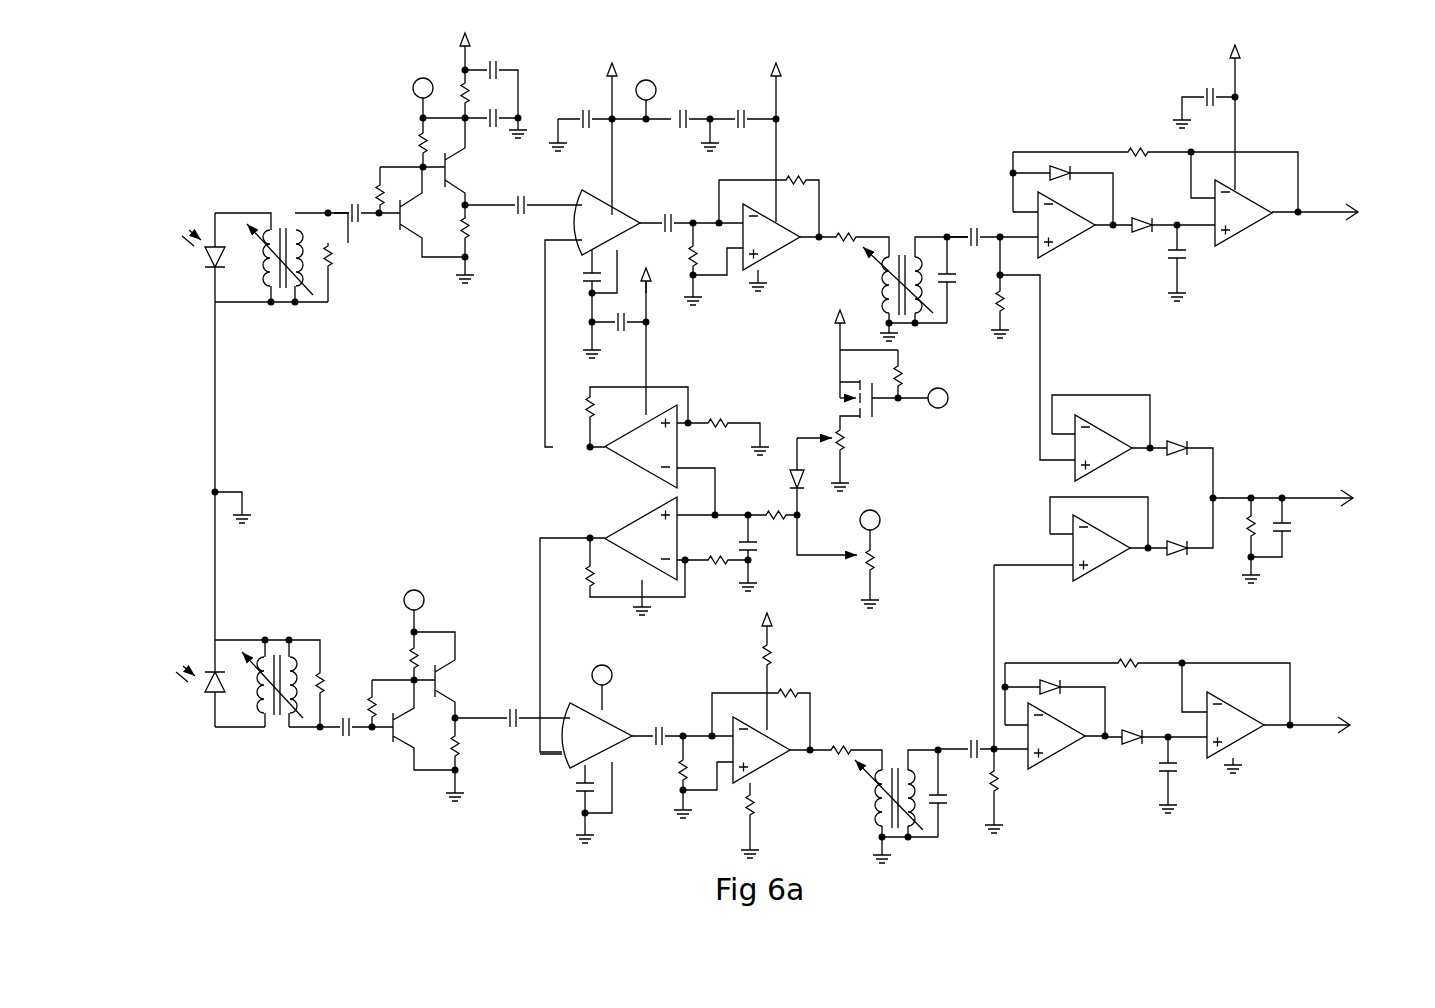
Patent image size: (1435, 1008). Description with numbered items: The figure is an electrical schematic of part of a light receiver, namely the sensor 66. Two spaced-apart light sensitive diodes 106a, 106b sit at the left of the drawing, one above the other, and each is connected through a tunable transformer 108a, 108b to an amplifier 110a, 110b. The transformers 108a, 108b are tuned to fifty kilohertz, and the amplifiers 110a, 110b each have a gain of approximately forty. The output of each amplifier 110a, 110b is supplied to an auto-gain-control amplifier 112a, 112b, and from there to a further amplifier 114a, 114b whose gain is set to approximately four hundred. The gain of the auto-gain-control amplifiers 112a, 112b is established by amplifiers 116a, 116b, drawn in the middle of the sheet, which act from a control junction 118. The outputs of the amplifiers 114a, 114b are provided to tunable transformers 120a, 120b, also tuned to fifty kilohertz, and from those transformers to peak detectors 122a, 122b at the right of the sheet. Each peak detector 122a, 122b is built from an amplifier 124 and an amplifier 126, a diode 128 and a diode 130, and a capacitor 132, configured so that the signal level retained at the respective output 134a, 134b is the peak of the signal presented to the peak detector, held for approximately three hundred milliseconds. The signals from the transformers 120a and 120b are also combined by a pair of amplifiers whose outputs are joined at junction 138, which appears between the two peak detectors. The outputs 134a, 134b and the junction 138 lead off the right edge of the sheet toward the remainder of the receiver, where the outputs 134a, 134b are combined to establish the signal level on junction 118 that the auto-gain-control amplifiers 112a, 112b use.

The sensor 66 is at (765, 448).
The light sensitive diode 106a is at (198, 260).
The light sensitive diode 106b is at (198, 665).
The tunable transformer 108a is at (290, 307).
The tunable transformer 108b is at (287, 633).
The amplifier 110a is at (430, 263).
The amplifier 110b is at (443, 627).
The auto-gain-control amplifier 112a is at (620, 200).
The auto-gain-control amplifier 112b is at (613, 717).
The amplifier 114a is at (788, 250).
The amplifier 114b is at (775, 767).
The amplifier 116a is at (615, 457).
The amplifier 116b is at (618, 523).
The control junction 118 is at (887, 532).
The tunable transformer 120a is at (885, 225).
The tunable transformer 120b is at (875, 740).
The peak detector 122a is at (1045, 150).
The peak detector 122b is at (1283, 656).
The amplifier 124 is at (1077, 243).
The amplifier 126 is at (1253, 232).
The diode 128 is at (1075, 167).
The diode 130 is at (1143, 235).
The capacitor 132 is at (1192, 258).
The output 134a is at (1322, 207).
The output 134b is at (1318, 713).
The output junction 138 is at (1312, 493).